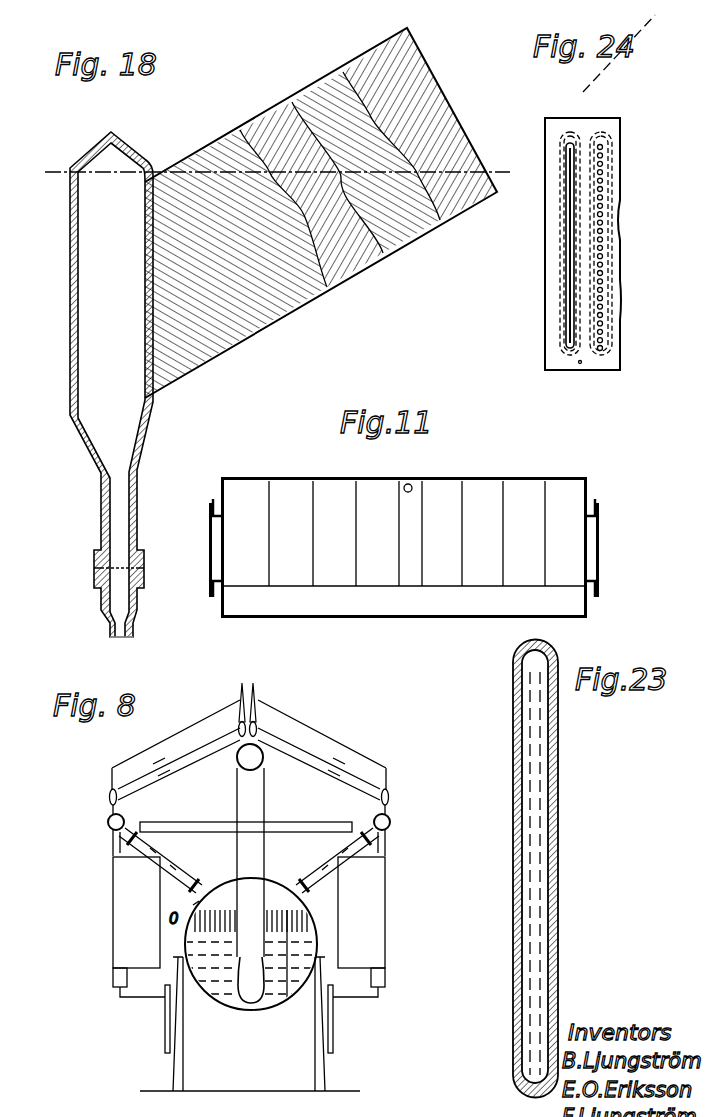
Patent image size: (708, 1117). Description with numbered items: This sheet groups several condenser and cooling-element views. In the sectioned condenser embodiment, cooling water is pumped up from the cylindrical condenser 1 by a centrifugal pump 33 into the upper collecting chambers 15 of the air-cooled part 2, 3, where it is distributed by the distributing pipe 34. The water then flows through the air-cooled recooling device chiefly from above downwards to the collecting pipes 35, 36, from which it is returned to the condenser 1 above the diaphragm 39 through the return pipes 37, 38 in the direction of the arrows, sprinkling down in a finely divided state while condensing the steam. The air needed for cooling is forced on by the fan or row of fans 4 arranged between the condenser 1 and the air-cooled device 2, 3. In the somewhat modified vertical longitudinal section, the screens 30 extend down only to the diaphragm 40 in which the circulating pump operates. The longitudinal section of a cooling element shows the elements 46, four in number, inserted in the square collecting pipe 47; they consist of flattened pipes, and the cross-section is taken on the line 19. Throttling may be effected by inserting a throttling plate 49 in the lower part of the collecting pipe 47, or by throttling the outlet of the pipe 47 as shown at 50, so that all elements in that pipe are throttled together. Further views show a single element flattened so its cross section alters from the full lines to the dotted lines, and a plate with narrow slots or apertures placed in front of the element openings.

In FIG. 8, the cylindrical condenser 1 is at (270, 884).
In FIG. 8, the air-cooled part 2 is at (215, 745).
In FIG. 8, the air-cooled part 3 is at (312, 757).
In FIG. 8, the fan 4 is at (320, 828).
In FIG. 8, the upper collecting chambers 15 is at (246, 700).
In FIG. 18, the section line 19— 19 is at (276, 181).
In FIG. 11, the screens 30 is at (355, 505).
In FIG. 8, the centrifugal pump 33 is at (248, 993).
In FIG. 8, the distributing pipe 34 is at (259, 763).
In FIG. 8, the collecting pipe 35 is at (109, 820).
In FIG. 8, the collecting pipe 36 is at (389, 820).
In FIG. 8, the return pipe 37 is at (155, 852).
In FIG. 8, the return pipe 38 is at (318, 874).
In FIG. 8, the diaphragm 39 is at (215, 890).
In FIG. 11, the diaphragm 40 is at (382, 588).
In FIG. 18, the elements 46 is at (203, 160).
In FIG. 18, the square collecting pipe 47 is at (121, 163).
In FIG. 18, the throttling plate 49 is at (94, 583).
In FIG. 18, the throttled outlet 50 is at (121, 637).